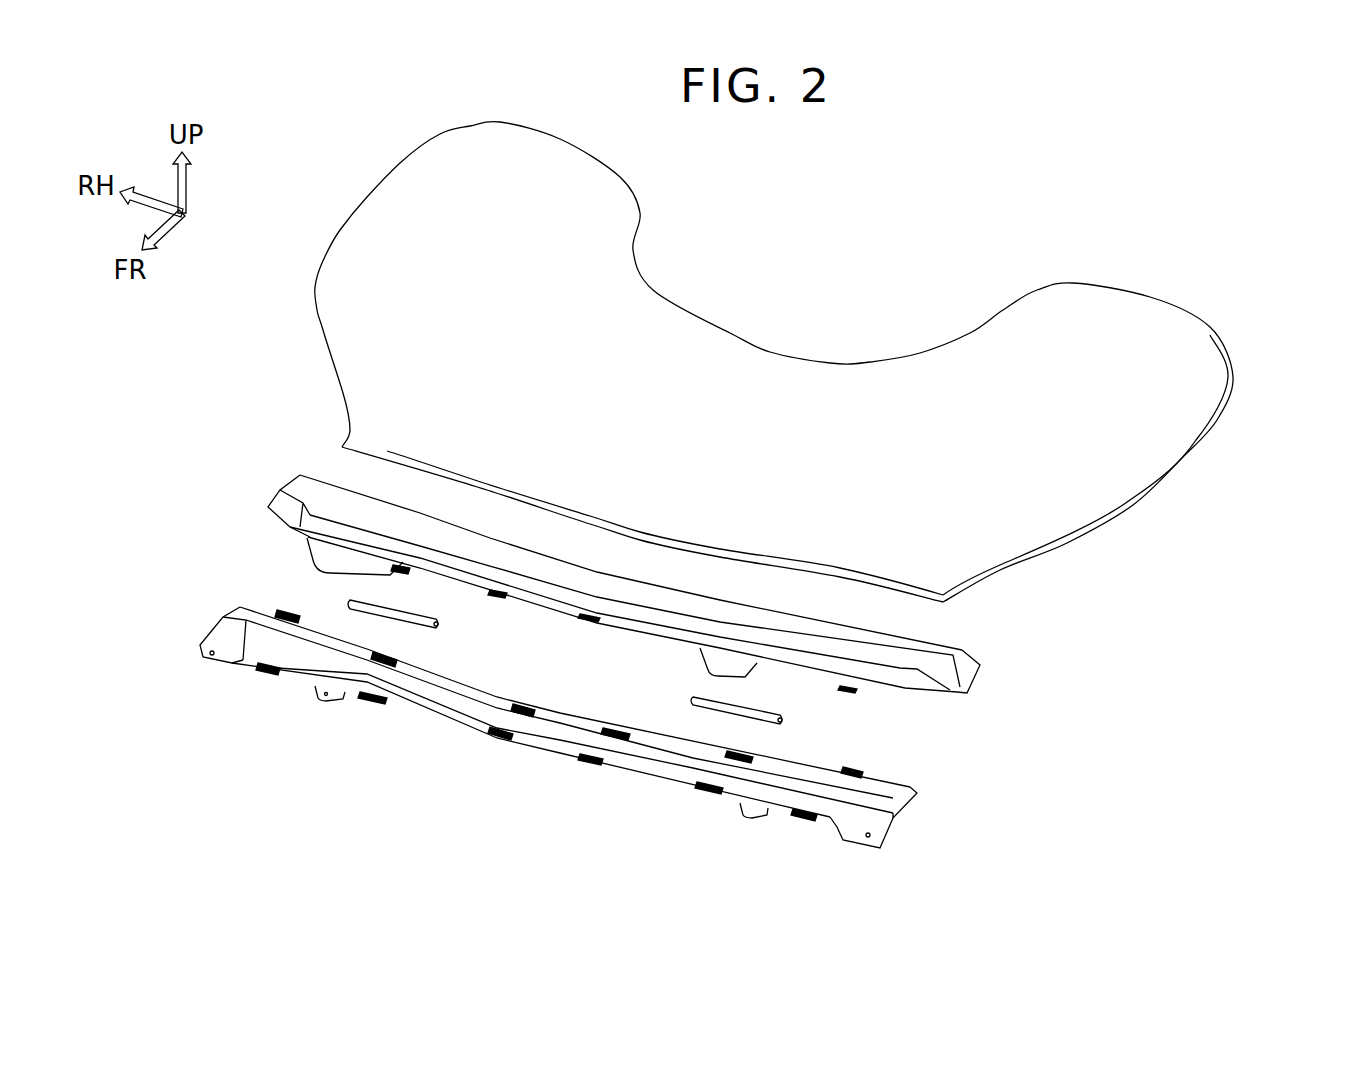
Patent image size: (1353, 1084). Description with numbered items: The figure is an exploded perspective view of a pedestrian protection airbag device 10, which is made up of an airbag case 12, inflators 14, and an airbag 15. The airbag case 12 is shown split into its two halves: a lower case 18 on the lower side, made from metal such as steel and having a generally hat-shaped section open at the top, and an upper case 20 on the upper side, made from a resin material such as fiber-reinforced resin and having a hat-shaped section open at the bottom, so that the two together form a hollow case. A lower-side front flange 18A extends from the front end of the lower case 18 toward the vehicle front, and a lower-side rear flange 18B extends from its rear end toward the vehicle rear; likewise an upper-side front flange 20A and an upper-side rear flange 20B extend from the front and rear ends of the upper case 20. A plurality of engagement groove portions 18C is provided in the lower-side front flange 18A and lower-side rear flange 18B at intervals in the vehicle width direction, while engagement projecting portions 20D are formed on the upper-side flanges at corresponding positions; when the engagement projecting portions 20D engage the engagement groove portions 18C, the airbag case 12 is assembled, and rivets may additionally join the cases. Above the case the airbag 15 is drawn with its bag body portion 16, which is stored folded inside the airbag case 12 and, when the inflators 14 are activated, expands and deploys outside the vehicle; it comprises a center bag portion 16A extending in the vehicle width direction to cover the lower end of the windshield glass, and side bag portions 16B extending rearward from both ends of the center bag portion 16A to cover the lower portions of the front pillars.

The airbag device 10 is at (739, 500).
The airbag case 12 is at (627, 704).
The inflators 14 is at (440, 617).
The airbag 15 is at (820, 334).
The bag body portion 16 is at (820, 334).
The center bag portion 16A is at (767, 363).
The side bag portions 16B is at (470, 125).
The lower case 18 is at (600, 735).
The lower-side front flange 18A is at (413, 713).
The lower-side rear flange 18B is at (477, 693).
The engagement groove portions 18C is at (280, 615).
The upper case 20 is at (680, 636).
The upper-side front flange 20A is at (640, 627).
The upper-side rear flange 20B is at (975, 665).
The engagement projecting portions 20D is at (330, 578).